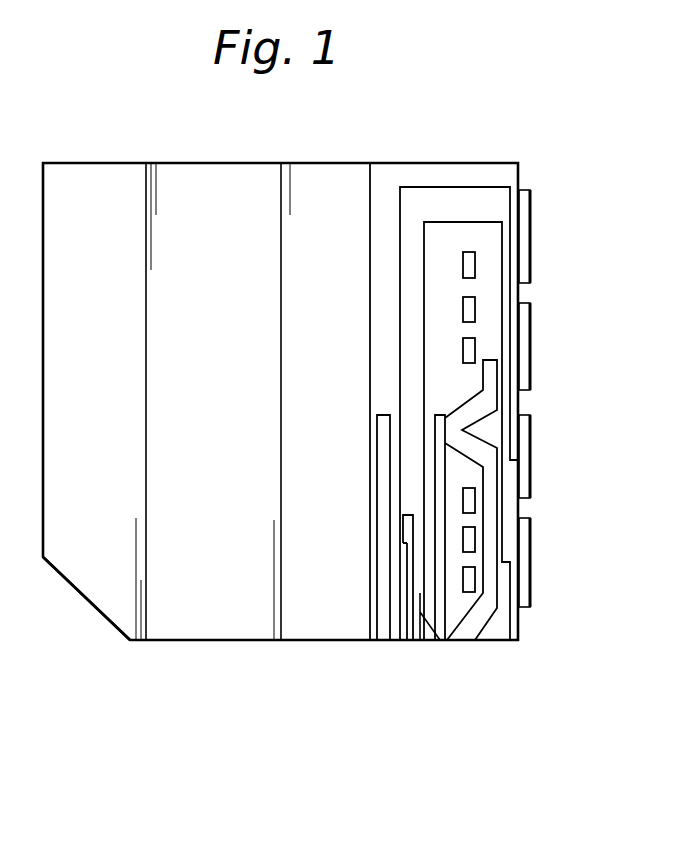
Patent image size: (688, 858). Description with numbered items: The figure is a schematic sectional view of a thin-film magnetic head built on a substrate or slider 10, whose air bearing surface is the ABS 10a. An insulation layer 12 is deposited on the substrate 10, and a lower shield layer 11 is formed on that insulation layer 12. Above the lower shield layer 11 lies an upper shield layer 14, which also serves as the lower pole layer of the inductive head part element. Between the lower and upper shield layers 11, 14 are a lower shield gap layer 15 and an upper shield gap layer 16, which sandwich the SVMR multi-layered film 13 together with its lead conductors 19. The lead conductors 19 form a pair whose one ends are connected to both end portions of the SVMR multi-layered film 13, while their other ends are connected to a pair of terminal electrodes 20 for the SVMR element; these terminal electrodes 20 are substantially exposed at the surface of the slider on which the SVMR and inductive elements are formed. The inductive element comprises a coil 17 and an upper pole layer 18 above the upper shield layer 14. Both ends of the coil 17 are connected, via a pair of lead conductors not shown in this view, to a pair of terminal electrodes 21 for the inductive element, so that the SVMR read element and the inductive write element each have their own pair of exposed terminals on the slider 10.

The substrate or slider 10 is at (119, 178).
The ABS of the slider 10a is at (200, 643).
The lower shield layer 11 is at (380, 641).
The insulation layer 12 is at (372, 608).
The SVMR multi-layered film 13 is at (410, 643).
The upper shield layer 14 is at (462, 632).
The lower shield gap layer 15 is at (400, 642).
The upper shield gap layer 16 is at (429, 620).
The coil 17 is at (463, 352).
The upper pole layer 18 is at (485, 642).
The lead conductors 19 is at (440, 221).
The terminal electrodes for SVMR element 20 is at (522, 477).
The terminal electrodes for inductive element 21 is at (522, 255).